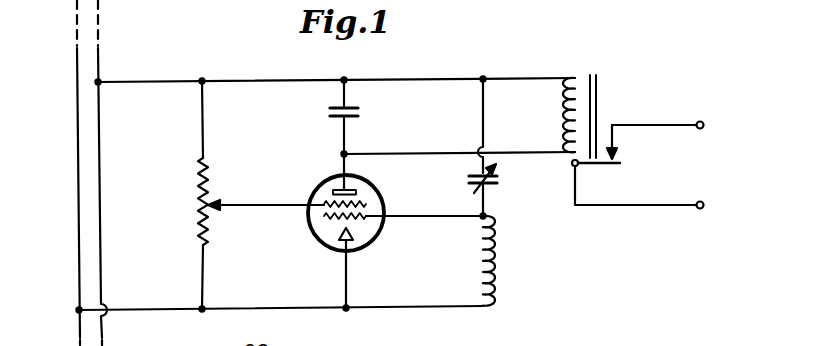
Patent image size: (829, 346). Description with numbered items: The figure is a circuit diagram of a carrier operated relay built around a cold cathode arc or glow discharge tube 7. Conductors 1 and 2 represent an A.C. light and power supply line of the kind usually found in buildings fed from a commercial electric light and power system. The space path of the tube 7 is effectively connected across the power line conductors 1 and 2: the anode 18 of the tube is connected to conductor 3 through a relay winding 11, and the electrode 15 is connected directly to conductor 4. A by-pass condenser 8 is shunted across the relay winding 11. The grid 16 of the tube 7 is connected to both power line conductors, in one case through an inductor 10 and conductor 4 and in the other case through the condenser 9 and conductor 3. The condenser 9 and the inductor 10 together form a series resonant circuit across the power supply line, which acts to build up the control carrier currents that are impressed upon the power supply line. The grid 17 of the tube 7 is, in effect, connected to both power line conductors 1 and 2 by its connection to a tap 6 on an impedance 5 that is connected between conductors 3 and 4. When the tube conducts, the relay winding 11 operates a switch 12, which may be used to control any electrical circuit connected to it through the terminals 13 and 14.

The conductor 1 is at (76, 190).
The conductor 2 is at (101, 189).
The conductor 3 is at (268, 75).
The conductor 4 is at (266, 307).
The impedance 5 is at (196, 179).
The tap 6 is at (221, 198).
The tube 7 is at (386, 204).
The by-pass condenser 8 is at (360, 114).
The condenser 9 is at (499, 181).
The inductor 10 is at (499, 263).
The relay winding 11 is at (587, 75).
The switch 12 is at (618, 158).
The terminal 13 is at (706, 124).
The terminal 14 is at (706, 205).
The electrode 15 is at (352, 233).
The grid 16 is at (328, 223).
The grid 17 is at (368, 201).
The anode 18 is at (332, 187).